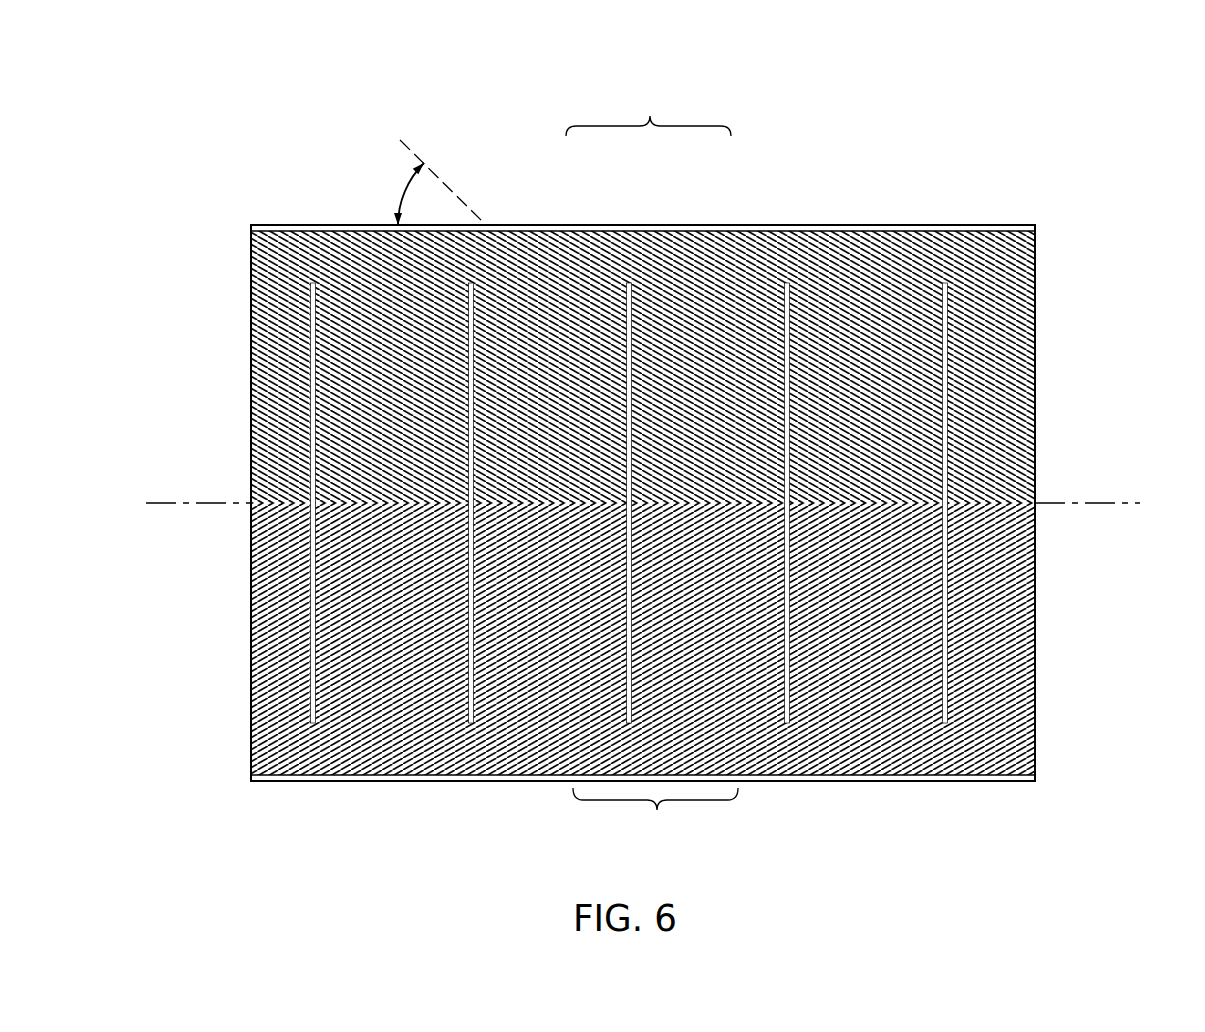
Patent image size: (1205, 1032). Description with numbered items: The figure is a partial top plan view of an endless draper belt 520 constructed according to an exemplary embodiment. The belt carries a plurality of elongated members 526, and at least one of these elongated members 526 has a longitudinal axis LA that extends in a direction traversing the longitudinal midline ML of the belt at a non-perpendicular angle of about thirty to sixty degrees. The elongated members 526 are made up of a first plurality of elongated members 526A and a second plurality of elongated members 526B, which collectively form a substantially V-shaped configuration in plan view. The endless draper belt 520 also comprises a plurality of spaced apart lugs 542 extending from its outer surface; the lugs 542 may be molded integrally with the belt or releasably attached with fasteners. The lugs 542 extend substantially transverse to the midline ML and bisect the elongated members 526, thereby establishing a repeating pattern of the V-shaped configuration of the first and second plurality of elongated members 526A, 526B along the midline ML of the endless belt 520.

The endless draper belt 520 is at (572, 99).
The elongated members 526 is at (628, 220).
The first plurality of elongated members 526A is at (655, 820).
The second plurality of elongated members 526B is at (648, 105).
The lugs 542 is at (950, 323).
The longitudinal axis LA is at (420, 163).
The longitudinal midline ML is at (1116, 493).